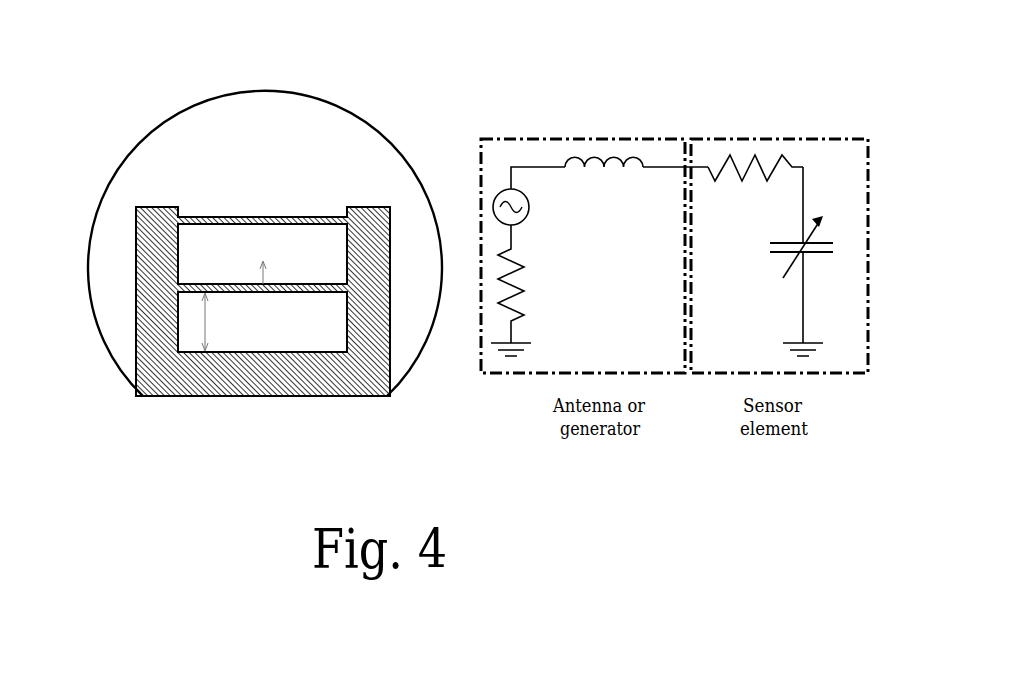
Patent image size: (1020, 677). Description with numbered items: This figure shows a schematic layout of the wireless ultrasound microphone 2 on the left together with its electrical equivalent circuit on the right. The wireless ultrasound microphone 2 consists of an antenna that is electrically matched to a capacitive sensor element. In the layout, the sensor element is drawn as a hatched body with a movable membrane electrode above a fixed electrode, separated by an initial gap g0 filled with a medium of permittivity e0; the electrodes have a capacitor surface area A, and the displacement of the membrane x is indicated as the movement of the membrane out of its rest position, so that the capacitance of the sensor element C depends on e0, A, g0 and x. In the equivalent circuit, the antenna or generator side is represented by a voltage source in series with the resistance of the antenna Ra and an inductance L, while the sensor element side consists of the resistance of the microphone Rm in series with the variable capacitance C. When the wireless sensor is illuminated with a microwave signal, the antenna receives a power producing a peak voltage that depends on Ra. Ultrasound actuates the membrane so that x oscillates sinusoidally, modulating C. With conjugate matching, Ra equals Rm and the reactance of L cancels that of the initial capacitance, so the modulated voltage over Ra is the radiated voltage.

The wireless ultrasound microphone 2 is at (411, 127).
The inductance L is at (604, 181).
The resistance of the antenna Ra is at (525, 284).
The resistance of the microphone Rm is at (755, 181).
The capacitance of the sensor element C is at (814, 247).
The capacitor surface area A is at (318, 390).
The initial gap g0 is at (195, 322).
The permittivity of vacuum e0 is at (265, 322).
The displacement of the membrane x is at (273, 272).